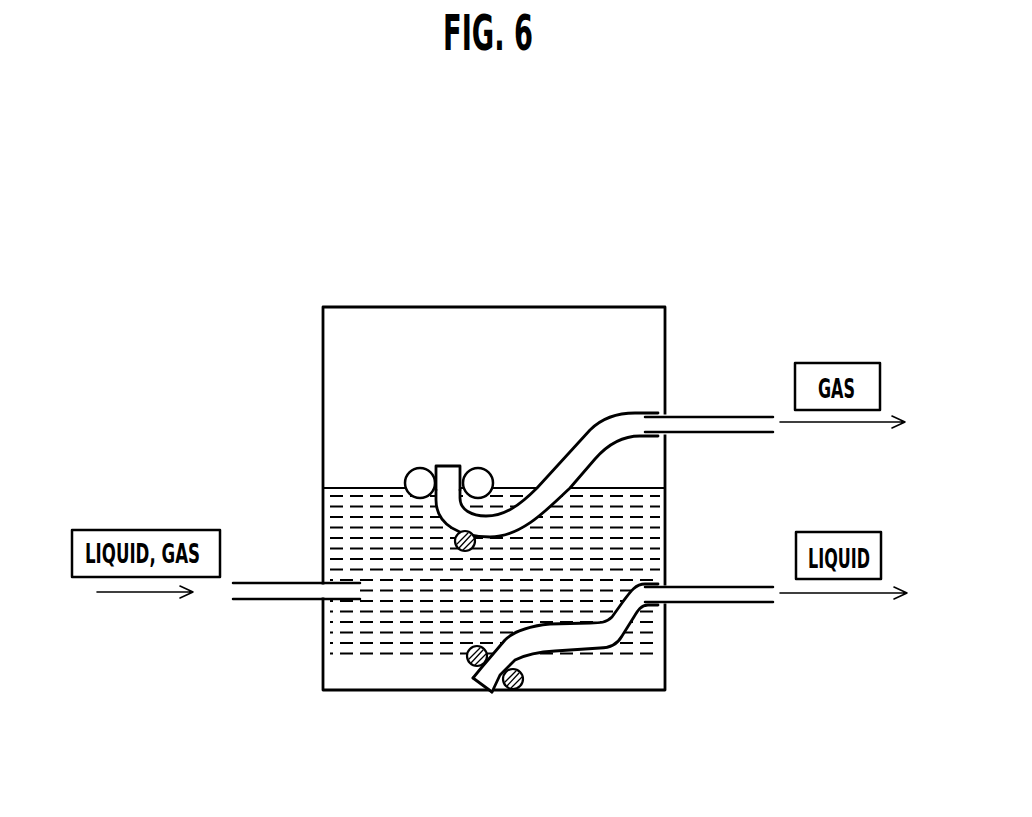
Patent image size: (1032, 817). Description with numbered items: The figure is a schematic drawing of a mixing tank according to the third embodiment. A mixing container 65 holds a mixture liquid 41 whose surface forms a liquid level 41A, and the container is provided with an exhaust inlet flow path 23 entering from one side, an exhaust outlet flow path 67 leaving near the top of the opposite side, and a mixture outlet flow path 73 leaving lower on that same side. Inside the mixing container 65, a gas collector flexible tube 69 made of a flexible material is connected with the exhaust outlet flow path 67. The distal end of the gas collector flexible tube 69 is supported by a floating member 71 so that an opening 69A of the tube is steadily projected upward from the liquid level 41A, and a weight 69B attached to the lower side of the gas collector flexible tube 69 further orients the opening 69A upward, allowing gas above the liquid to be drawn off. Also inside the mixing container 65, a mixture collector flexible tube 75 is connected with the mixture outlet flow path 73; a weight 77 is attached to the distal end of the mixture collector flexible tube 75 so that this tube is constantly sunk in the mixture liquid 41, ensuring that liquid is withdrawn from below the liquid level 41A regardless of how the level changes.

The exhaust inlet flow path 23 is at (273, 590).
The mixture liquid 41 is at (385, 682).
The liquid level 41A is at (618, 487).
The mixing container 65 is at (598, 306).
The exhaust outlet flow path 67 is at (731, 418).
The gas collector flexible tube 69 is at (568, 455).
The opening 69A is at (450, 466).
The weight 69B is at (458, 550).
The floating member 71 is at (417, 482).
The mixture outlet flow path 73 is at (738, 590).
The mixture collector flexible tube 75 is at (604, 636).
The weight 77 is at (517, 692).